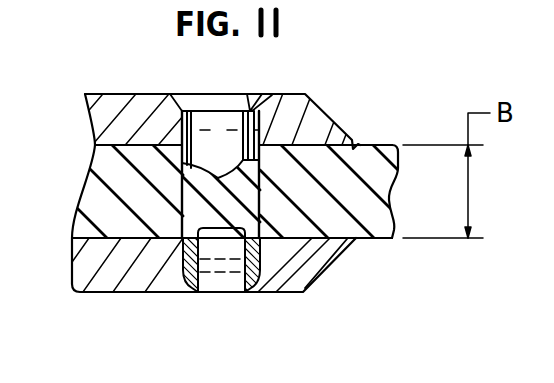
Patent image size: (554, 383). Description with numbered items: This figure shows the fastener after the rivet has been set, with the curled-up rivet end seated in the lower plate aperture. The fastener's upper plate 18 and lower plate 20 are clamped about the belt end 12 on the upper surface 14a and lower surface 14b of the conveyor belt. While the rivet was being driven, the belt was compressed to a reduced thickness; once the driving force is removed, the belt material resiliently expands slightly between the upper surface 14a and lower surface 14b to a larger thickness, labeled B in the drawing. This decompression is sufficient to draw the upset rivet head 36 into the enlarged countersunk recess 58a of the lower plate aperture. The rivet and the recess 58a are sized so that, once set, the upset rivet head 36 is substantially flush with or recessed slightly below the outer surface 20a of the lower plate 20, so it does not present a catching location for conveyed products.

The upper plate 18 is at (120, 103).
The belt end 12 is at (95, 198).
The upper surface of the conveyor belt 14a is at (367, 146).
The lower surface of the conveyor belt 14b is at (373, 241).
The lower plate 20 is at (147, 293).
The outer surface of the lower plate 20a is at (121, 293).
The upset rivet head 36 is at (186, 288).
The enlarged countersunk recess 58a is at (218, 283).